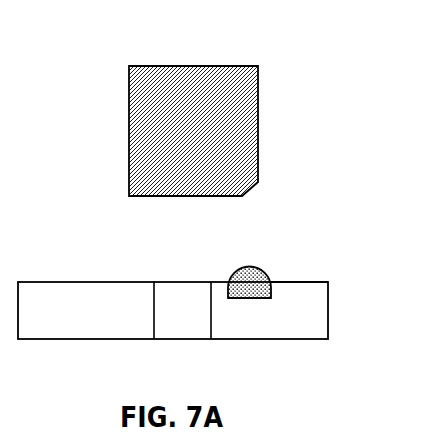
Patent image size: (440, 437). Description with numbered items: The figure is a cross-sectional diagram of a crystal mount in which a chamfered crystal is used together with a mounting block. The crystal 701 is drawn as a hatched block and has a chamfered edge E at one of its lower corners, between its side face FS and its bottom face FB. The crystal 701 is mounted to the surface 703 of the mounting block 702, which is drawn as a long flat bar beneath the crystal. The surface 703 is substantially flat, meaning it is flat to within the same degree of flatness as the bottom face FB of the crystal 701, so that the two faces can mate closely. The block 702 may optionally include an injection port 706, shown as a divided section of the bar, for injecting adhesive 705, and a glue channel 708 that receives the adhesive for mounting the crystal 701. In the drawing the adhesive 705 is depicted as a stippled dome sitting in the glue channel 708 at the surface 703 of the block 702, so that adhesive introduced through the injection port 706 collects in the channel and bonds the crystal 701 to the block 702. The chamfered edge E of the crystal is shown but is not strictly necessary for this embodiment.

The crystal 701 is at (129, 123).
The mounting block 702 is at (328, 305).
The surface 703 is at (298, 282).
The adhesive 705 is at (243, 266).
The injection port 706 is at (187, 339).
The glue channel 708 is at (253, 298).
The side face FS is at (258, 108).
The chamfered edge E is at (253, 189).
The bottom face FB is at (173, 196).